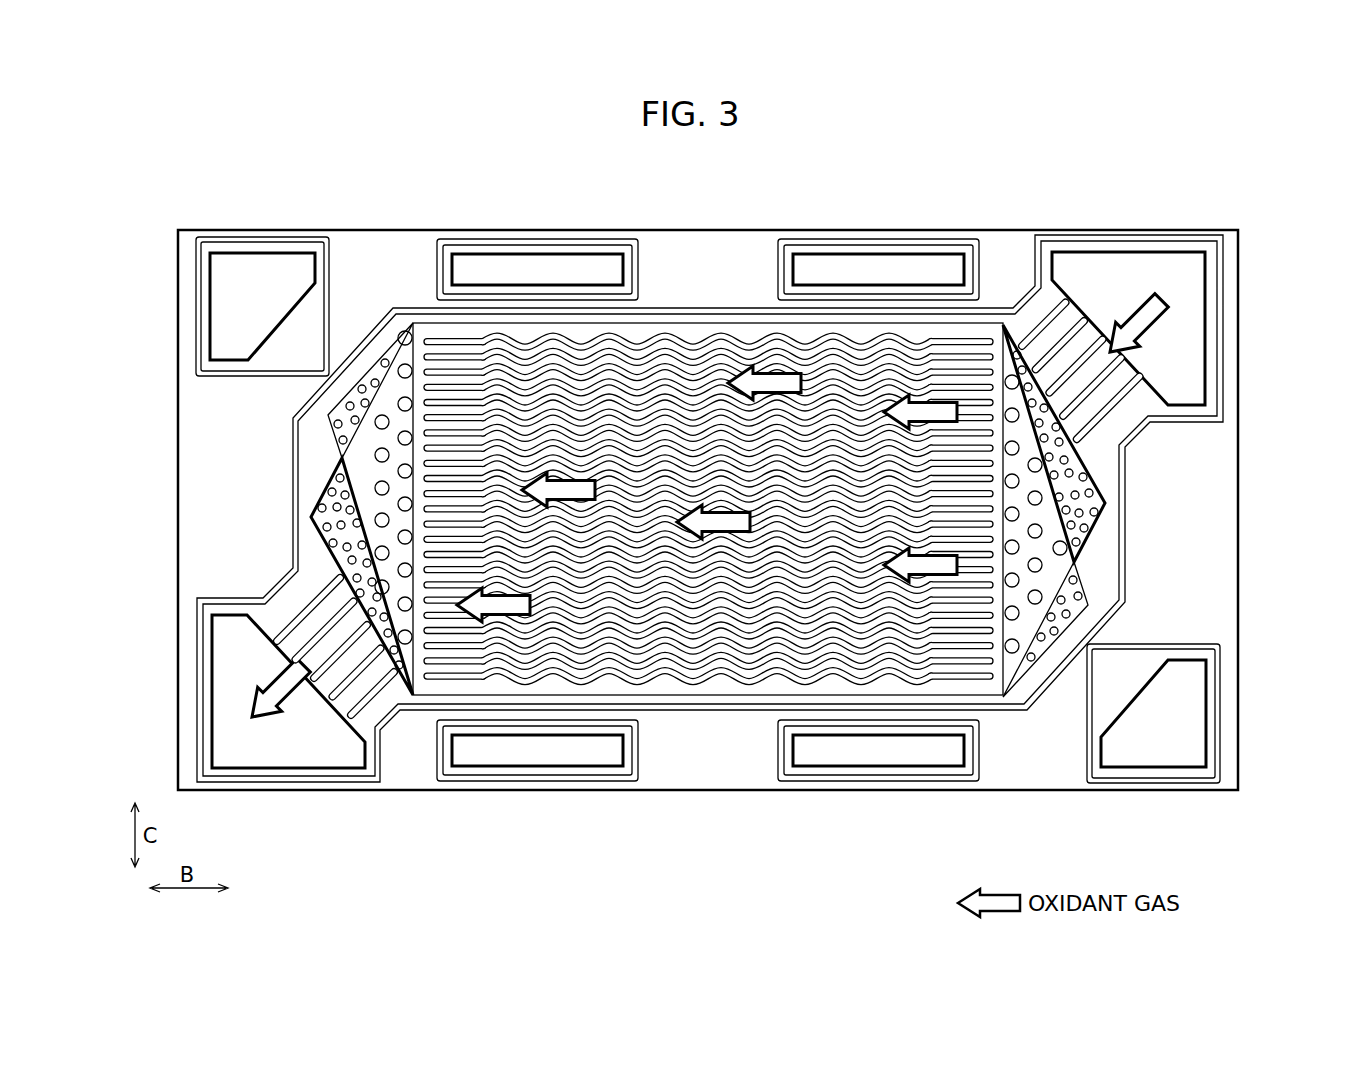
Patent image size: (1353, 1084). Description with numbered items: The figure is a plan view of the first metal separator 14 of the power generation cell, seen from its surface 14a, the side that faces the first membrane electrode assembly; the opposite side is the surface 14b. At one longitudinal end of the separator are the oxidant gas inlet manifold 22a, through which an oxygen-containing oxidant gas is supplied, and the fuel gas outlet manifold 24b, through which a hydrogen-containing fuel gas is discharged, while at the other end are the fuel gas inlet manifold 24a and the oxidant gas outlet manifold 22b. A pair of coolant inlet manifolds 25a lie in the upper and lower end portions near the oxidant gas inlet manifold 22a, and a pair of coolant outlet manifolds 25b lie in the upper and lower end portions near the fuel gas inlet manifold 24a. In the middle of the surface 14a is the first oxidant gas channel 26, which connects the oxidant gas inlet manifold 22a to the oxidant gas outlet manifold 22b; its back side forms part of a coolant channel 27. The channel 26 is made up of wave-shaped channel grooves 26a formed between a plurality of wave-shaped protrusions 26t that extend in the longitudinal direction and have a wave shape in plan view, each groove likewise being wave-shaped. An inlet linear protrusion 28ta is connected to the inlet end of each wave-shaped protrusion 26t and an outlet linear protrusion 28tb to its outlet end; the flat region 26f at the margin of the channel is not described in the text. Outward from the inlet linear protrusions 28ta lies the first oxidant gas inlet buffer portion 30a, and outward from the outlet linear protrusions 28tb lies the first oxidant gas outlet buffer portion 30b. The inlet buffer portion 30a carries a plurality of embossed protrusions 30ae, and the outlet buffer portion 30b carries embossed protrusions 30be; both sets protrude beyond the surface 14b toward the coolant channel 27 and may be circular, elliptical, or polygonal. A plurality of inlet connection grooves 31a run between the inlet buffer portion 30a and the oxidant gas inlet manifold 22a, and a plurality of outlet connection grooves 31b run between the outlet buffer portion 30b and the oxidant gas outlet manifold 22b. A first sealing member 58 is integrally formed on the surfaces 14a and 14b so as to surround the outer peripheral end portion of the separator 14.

The first metal separator 14 is at (391, 169).
The surface 14a is at (688, 775).
The surface 14b is at (705, 770).
The oxidant gas inlet manifold 22a is at (1120, 268).
The oxidant gas outlet manifold 22b is at (247, 735).
The fuel gas inlet manifold 24a is at (243, 268).
The fuel gas outlet manifold 24b is at (1150, 740).
The coolant inlet manifolds 25a is at (830, 268).
The coolant outlet manifolds 25b is at (525, 268).
The first oxidant gas channel 26 is at (708, 518).
The wave-shaped channel grooves 26a is at (707, 508).
The flat portion of flow field 26f is at (470, 333).
The wave-shaped protrusions 26t is at (707, 433).
The coolant channel 27 is at (748, 625).
The inlet linear protrusion 28ta is at (960, 509).
The outlet linear protrusion 28tb is at (440, 665).
The first oxidant gas inlet buffer portion 30a is at (1163, 511).
The embossed protrusions 30ae is at (1037, 565).
The first oxidant gas outlet buffer portion 30b is at (254, 509).
The embossed protrusions 30be is at (380, 455).
The inlet connection grooves 31a is at (1043, 350).
The outlet connection grooves 31b is at (368, 680).
The first sealing member 58 is at (620, 789).